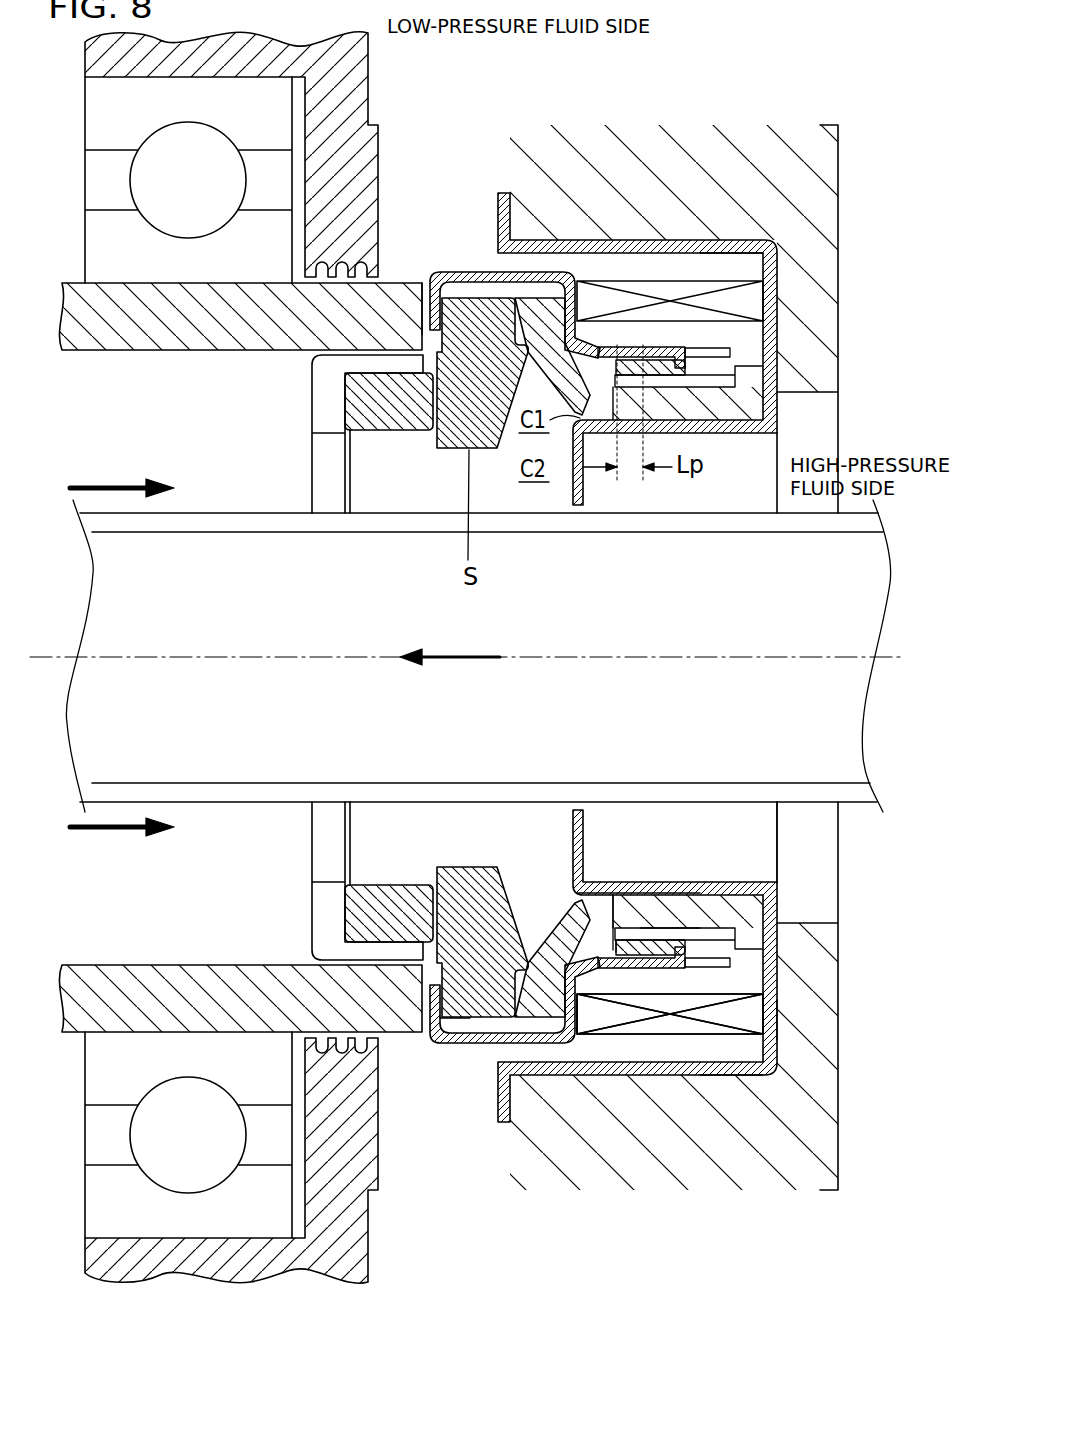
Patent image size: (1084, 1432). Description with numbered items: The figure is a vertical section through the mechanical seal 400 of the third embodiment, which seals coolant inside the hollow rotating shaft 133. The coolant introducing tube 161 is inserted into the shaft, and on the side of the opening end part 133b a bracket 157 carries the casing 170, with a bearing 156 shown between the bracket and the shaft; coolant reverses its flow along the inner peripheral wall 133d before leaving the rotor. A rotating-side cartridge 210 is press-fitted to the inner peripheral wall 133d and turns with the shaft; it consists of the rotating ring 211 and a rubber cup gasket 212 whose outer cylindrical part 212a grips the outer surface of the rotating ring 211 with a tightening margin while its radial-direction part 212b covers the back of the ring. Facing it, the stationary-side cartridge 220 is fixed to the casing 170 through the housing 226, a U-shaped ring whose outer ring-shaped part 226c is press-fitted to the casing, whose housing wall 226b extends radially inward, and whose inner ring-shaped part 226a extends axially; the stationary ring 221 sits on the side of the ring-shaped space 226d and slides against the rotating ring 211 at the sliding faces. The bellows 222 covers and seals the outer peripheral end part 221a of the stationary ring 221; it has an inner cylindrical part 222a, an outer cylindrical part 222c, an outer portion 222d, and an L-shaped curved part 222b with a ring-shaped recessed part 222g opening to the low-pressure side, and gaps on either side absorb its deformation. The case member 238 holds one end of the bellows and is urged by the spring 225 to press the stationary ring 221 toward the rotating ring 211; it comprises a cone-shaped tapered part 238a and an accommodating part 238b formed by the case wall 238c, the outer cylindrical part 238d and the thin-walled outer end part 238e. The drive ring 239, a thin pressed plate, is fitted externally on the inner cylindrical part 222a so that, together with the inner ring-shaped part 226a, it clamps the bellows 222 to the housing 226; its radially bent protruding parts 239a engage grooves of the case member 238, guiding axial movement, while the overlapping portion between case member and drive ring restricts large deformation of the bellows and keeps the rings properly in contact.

The hollow rotating shaft 133 is at (85, 283).
The opening end part 133b is at (410, 335).
The inner peripheral wall 133d is at (103, 352).
The bearing 156 is at (112, 1202).
The bracket 157 is at (158, 1263).
The coolant introducing tube 161 is at (857, 803).
The casing 170 is at (820, 208).
The rotating-side cartridge 210 is at (208, 400).
The rotating ring 211 is at (413, 428).
The cup gasket 212 is at (327, 410).
The outer cylindrical part 212a is at (373, 953).
The radial-direction part 212b is at (325, 903).
The stationary-side cartridge 220 is at (745, 88).
The stationary ring 221 is at (480, 315).
The outer peripheral end part 221a is at (433, 975).
The bellows 222 is at (548, 300).
The inner cylindrical part 222a is at (678, 917).
The curved part 222b is at (567, 908).
The outer cylindrical part 222c is at (462, 1032).
The elastic body outer portion 222d is at (770, 937).
The ring-shaped recessed part 222g is at (597, 1003).
The spring 225 is at (690, 295).
The housing 226 is at (482, 272).
The inner ring-shaped part 226a is at (703, 884).
The housing wall 226b is at (770, 1020).
The outer ring-shaped part 226c is at (760, 1097).
The ring-shaped space 226d is at (747, 270).
The case member 238 is at (612, 372).
The tapered part 238a is at (655, 1000).
The accommodating part 238b is at (650, 1284).
The case wall 238c is at (598, 1050).
The outer cylindrical part 238d is at (548, 1060).
The outer end part 238e is at (425, 1035).
The drive ring 239 is at (680, 345).
The protruding parts 239a is at (708, 330).
The mechanical seal 400 is at (804, 97).